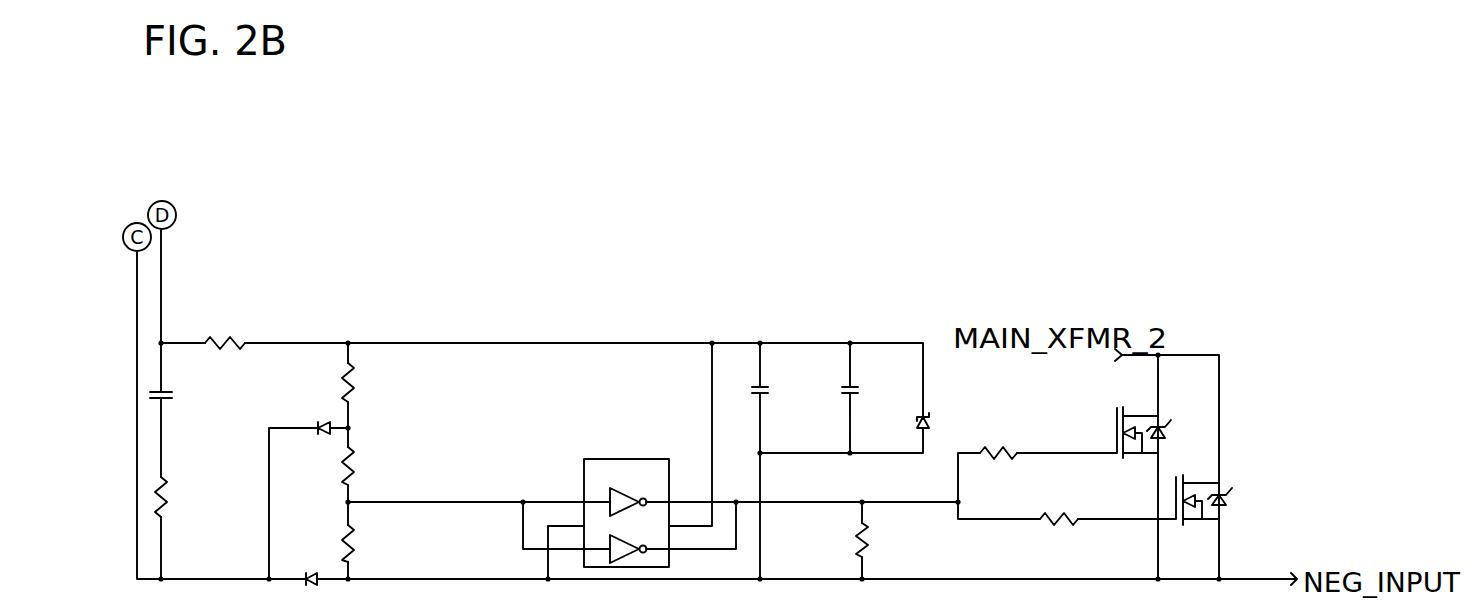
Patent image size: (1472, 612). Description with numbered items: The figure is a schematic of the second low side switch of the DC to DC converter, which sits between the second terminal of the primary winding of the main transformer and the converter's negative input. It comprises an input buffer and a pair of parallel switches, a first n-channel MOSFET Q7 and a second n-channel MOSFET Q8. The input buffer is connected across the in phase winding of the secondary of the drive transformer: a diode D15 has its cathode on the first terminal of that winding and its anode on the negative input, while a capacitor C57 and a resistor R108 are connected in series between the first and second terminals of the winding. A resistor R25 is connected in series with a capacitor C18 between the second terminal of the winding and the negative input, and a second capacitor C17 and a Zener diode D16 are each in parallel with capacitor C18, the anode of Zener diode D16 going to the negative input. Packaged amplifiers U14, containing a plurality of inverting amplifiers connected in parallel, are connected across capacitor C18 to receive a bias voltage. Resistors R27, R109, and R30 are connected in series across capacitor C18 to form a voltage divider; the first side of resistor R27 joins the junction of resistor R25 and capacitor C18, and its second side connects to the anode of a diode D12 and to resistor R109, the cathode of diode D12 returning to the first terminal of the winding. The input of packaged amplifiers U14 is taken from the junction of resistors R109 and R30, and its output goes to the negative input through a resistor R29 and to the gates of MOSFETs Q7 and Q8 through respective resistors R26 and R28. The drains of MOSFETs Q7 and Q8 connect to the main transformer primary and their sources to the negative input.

The resistor R25 is at (225, 330).
The capacitor C57 is at (193, 396).
The resistor R108 is at (199, 497).
The diode D12 is at (305, 415).
The diode D15 is at (306, 592).
The resistor R27 is at (380, 382).
The resistor R109 is at (386, 466).
The resistor R30 is at (381, 543).
The packaged amplifiers U14 is at (626, 498).
The capacitor C18 is at (788, 391).
The second capacitor C17 is at (878, 391).
The Zener diode D16 is at (950, 423).
The resistor R29 is at (895, 540).
The resistor R26 is at (995, 469).
The resistor R28 is at (1054, 535).
The first n-channel MOSFET Q7 is at (1137, 420).
The second n-channel MOSFET Q8 is at (1226, 507).